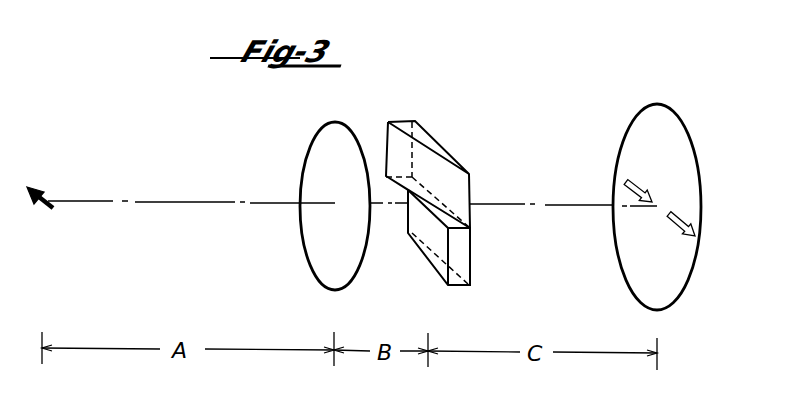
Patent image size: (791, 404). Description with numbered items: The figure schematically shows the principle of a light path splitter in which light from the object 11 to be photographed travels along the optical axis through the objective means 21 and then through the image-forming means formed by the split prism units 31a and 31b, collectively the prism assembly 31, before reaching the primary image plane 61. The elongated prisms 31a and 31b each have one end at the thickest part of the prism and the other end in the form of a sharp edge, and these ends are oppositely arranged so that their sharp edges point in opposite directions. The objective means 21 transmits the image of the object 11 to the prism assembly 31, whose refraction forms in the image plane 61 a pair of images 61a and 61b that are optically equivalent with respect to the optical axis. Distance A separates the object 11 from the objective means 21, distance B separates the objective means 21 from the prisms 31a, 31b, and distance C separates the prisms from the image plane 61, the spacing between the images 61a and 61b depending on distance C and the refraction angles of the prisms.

The object 11 is at (38, 203).
The objective means 21 is at (306, 250).
The split prism unit 31 is at (462, 186).
The split prism unit 31a is at (452, 168).
The split prism unit 31b is at (462, 263).
The primary image plane 61 is at (670, 207).
The image 61a is at (634, 182).
The image 61b is at (682, 216).